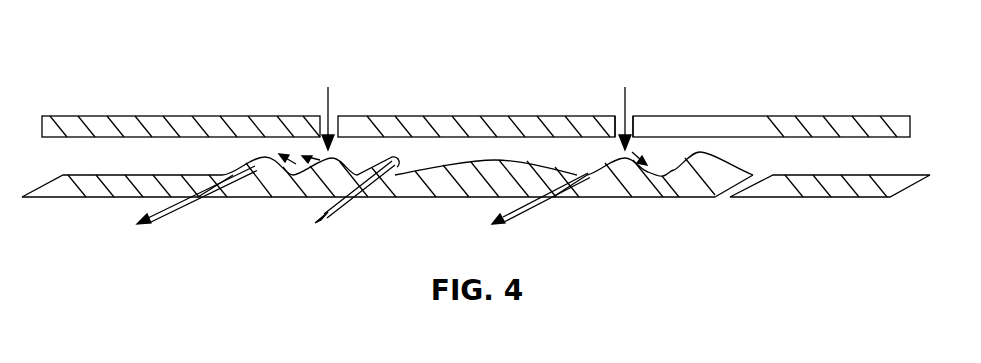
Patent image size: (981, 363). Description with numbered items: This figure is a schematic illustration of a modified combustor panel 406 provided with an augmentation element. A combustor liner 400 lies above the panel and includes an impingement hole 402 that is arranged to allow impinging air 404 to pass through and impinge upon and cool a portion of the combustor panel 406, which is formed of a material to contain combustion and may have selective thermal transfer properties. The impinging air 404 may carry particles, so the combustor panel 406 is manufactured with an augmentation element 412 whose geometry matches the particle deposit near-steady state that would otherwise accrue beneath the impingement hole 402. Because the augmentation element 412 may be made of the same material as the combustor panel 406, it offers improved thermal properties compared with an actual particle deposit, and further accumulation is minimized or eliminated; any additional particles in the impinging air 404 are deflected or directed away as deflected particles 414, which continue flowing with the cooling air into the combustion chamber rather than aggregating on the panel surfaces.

The combustor liner 400 is at (788, 128).
The impingement hole 402 is at (616, 106).
The impinging air 404 is at (321, 105).
The combustor panel 406 is at (842, 183).
The augmentation element 412 is at (501, 161).
The deflected particles 414 is at (351, 162).